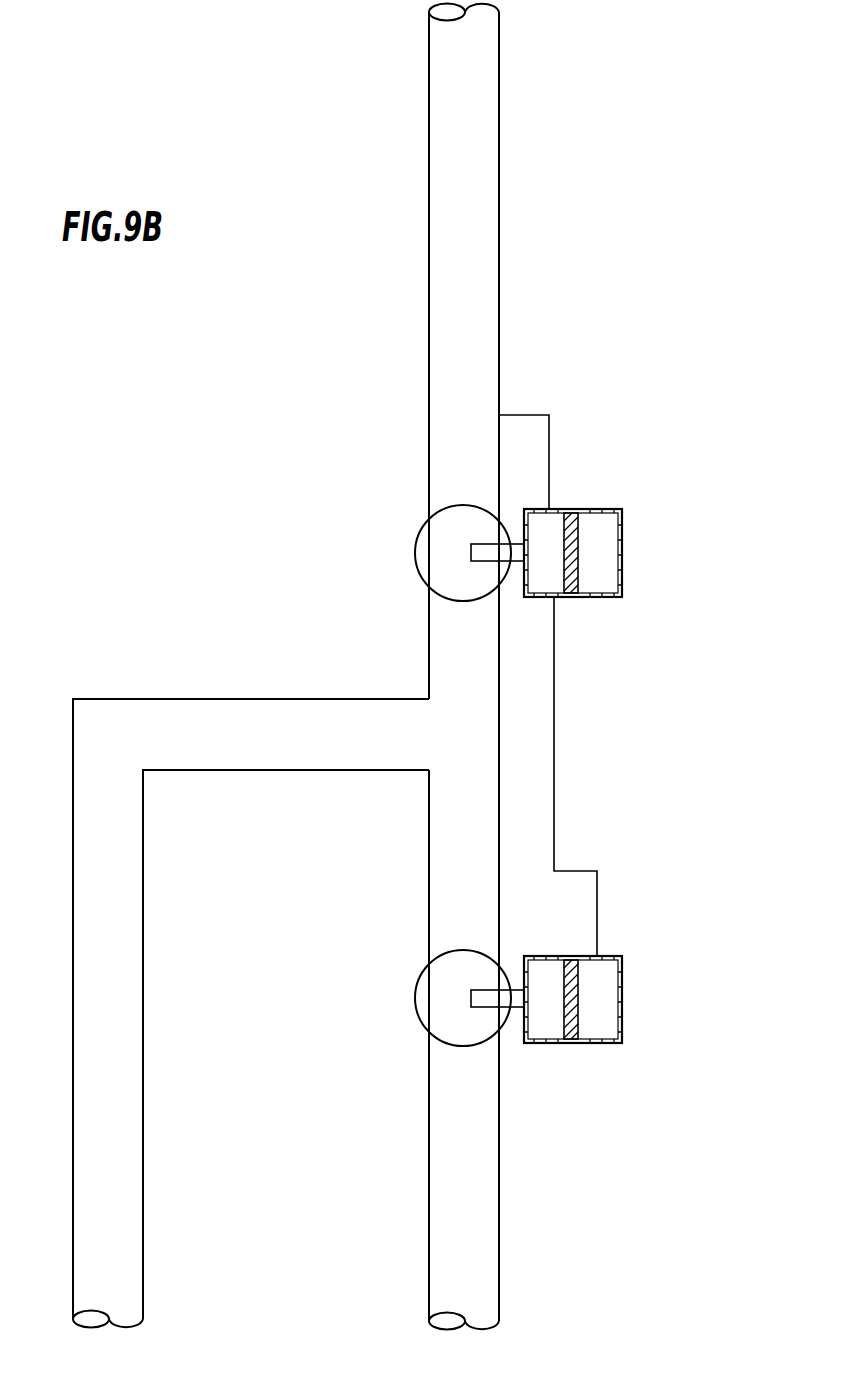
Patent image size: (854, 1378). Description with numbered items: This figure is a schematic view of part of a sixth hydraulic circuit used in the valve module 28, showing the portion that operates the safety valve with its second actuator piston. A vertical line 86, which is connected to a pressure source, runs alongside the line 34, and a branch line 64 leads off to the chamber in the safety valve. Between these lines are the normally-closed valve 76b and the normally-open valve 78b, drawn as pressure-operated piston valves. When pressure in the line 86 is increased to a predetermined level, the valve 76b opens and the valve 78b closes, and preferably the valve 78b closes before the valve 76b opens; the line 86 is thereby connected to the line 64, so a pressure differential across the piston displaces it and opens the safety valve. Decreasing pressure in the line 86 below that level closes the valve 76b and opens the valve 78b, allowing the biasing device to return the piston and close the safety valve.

The valve module 28 is at (667, 107).
The line 34 is at (500, 1120).
The line 86 is at (500, 124).
The line 64 is at (144, 990).
The normally-closed valve 76b is at (623, 551).
The normally-open valve 78b is at (623, 986).